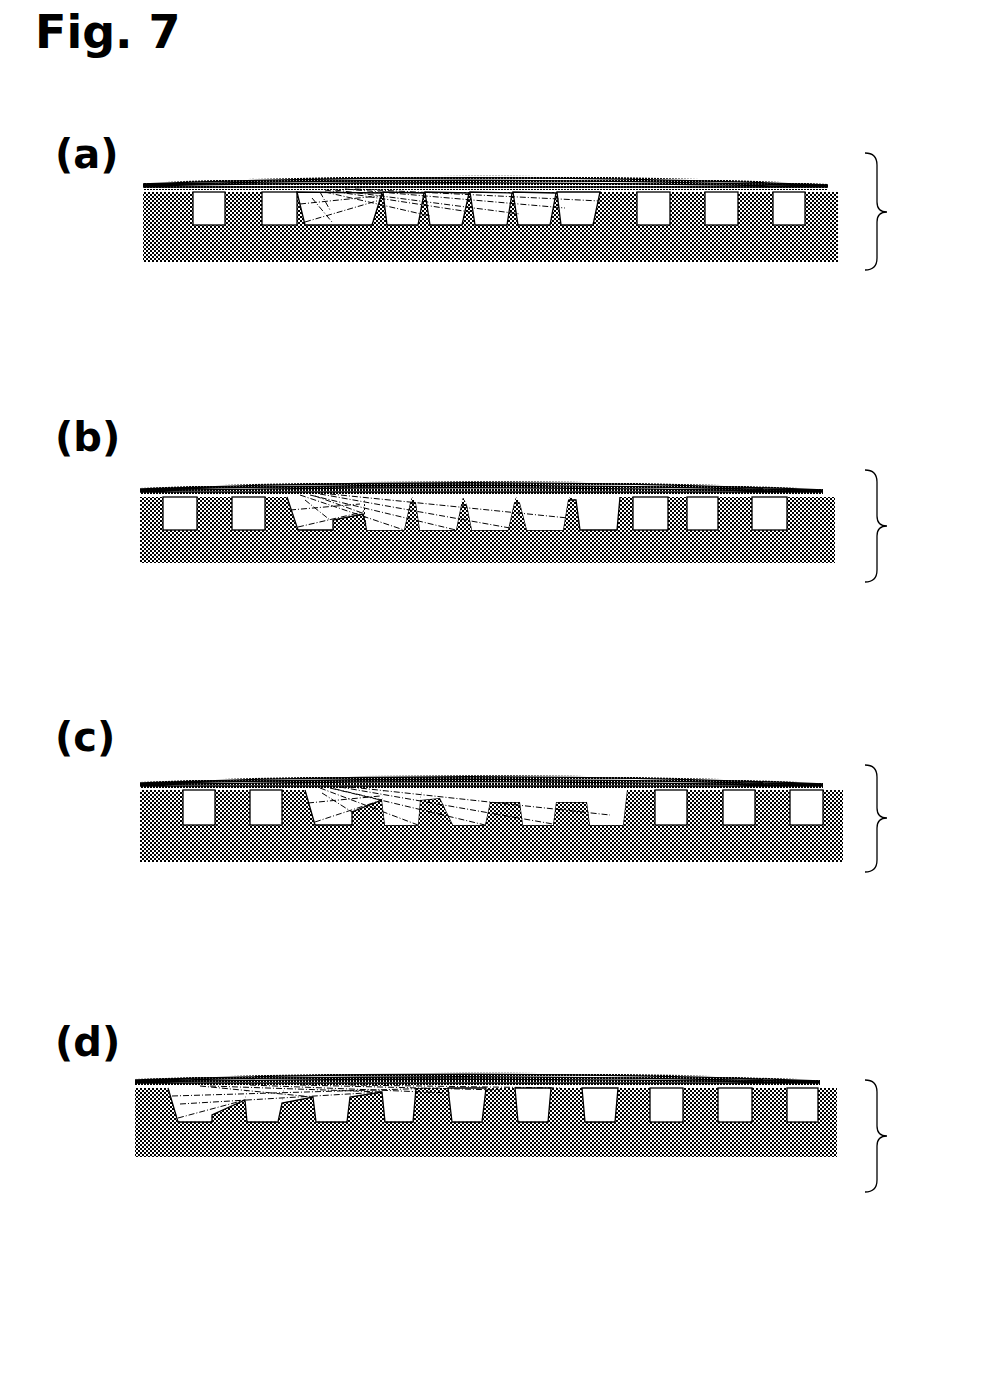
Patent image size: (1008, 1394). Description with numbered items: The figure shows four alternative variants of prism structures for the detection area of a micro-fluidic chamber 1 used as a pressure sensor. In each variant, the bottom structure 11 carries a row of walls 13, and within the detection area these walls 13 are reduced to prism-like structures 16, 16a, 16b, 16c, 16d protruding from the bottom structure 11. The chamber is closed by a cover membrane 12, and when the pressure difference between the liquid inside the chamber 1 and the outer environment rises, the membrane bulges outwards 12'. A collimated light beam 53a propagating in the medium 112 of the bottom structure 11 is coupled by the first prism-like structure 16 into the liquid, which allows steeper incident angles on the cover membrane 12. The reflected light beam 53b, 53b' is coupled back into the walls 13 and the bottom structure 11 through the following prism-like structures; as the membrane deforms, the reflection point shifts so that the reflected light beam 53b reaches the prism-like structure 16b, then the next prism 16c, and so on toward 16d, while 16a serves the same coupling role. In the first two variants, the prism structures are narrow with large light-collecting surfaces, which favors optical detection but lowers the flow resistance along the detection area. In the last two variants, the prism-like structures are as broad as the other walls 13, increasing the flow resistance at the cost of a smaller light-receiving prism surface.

The micro-fluidic chamber 1 is at (881, 672).
The bottom structure 11 is at (489, 719).
The medium of the bottom structure 112 is at (489, 719).
The cover membrane 12 is at (481, 591).
The outwardly bulged membrane 12' is at (481, 591).
The walls 13 is at (493, 663).
The first prism-like structure 16 is at (387, 711).
The prism-like structure 16a is at (431, 711).
The third prism-like structure 16b is at (487, 711).
The next prism 16c is at (546, 711).
The prism-like structure 16d is at (604, 711).
The collimated light beam 53a is at (306, 600).
The reflected light beam 53b is at (405, 592).
The reflected light beam 53b' is at (405, 592).